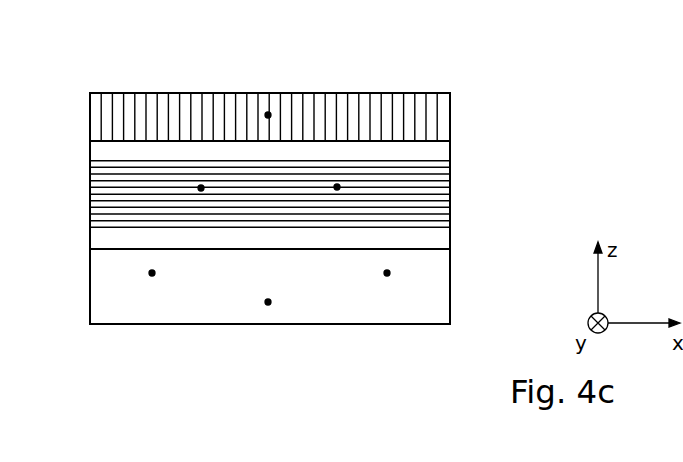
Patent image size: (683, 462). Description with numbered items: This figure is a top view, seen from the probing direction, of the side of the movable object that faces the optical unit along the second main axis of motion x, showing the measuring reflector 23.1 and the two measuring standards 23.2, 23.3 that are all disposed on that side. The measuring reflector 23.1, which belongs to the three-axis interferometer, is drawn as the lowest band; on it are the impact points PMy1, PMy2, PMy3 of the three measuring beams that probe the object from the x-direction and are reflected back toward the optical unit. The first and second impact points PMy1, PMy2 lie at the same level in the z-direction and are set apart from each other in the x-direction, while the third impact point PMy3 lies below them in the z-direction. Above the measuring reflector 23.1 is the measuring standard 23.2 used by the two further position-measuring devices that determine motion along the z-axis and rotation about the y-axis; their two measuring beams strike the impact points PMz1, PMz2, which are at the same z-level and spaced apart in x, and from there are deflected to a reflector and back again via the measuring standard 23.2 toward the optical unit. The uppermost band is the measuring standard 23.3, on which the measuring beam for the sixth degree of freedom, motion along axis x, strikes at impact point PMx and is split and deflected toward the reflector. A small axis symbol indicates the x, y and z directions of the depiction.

The measuring reflector 23.1 is at (97, 292).
The measuring standard 23.2 is at (97, 199).
The measuring standard 23.3 is at (97, 130).
The impact point PMx is at (268, 115).
The impact point PMz1 is at (201, 188).
The impact point PMz2 is at (337, 187).
The impact point PMy1 is at (152, 273).
The impact point PMy2 is at (387, 273).
The impact point PMy3 is at (268, 302).